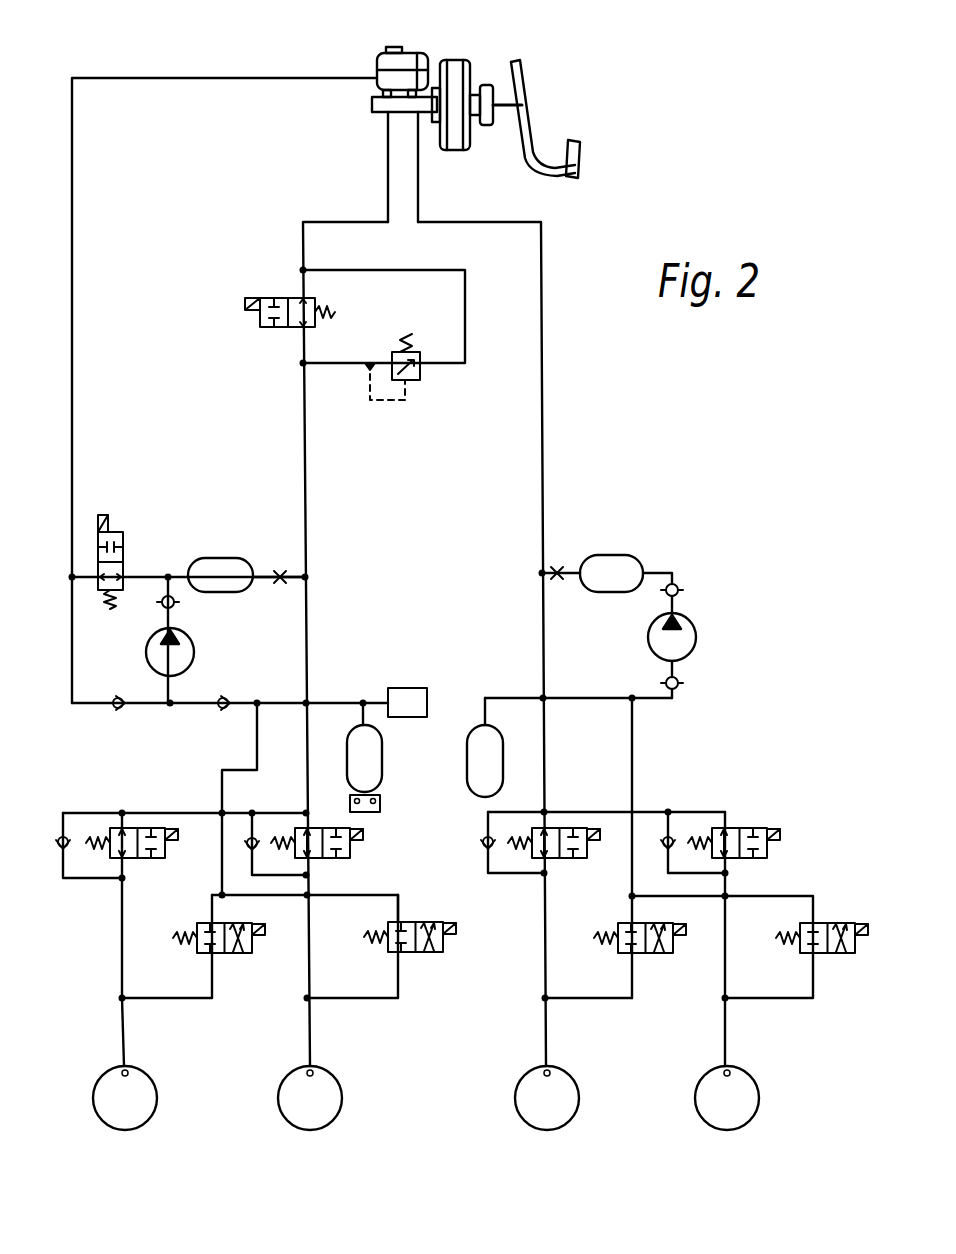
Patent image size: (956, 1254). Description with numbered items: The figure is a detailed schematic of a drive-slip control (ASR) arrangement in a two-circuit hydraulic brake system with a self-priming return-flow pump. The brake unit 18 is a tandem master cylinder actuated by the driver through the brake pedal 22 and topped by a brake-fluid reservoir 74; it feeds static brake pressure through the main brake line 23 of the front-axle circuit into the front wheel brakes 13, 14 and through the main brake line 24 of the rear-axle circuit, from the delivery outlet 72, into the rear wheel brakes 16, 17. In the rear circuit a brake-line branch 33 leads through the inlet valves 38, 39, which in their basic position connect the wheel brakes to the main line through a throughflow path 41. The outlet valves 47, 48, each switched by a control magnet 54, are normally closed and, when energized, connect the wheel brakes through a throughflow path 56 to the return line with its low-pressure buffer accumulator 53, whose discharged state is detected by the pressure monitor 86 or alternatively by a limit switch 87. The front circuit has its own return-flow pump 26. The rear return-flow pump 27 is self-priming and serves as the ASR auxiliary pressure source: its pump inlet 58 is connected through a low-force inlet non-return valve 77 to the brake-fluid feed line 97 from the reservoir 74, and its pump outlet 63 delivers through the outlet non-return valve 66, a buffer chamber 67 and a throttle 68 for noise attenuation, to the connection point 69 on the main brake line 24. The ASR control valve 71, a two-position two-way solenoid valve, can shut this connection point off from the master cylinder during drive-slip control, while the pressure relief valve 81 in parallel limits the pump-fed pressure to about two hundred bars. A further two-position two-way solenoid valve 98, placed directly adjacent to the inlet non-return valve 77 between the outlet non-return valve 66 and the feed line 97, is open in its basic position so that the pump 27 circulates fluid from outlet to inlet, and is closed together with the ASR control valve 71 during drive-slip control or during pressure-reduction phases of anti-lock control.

The brake-fluid reservoir 74 is at (380, 60).
The delivery outlet 72 is at (388, 133).
The brake unit 18 is at (428, 126).
The brake pedal 22 is at (537, 170).
The brake-fluid feed line 97 is at (88, 330).
The ASR control valve 71 is at (268, 298).
The pressure relief valve 81 is at (395, 352).
The main brake line 24 is at (300, 460).
The main brake line 23 is at (542, 420).
The 2/2-way solenoid valve 98 is at (125, 530).
The buffer chamber 67 is at (231, 588).
The throttle 68 is at (278, 575).
The connection point 69 is at (310, 575).
The pump outlet 63 is at (160, 605).
The outlet non-return valve 66 is at (175, 605).
The return-flow pump 27 is at (158, 666).
The pressure monitor 86 is at (418, 688).
The buffer accumulator 53 is at (372, 765).
The limit switch 87 is at (380, 803).
The inlet non-return valve 77 is at (122, 710).
The pump inlet 58 is at (172, 710).
The throughflow path 41 is at (118, 840).
The brake-line branch 33 is at (130, 815).
The inlet valve 38 is at (135, 858).
The inlet valve 39 is at (350, 850).
The control magnet 54 is at (445, 925).
The outlet valve 48 is at (420, 955).
The throughflow path 56 is at (246, 955).
The outlet valve 47 is at (222, 985).
The return-flow pump 26 is at (660, 651).
The wheel brake 16 is at (111, 1113).
The wheel brake 17 is at (296, 1113).
The wheel brake 13 is at (533, 1113).
The wheel brake 14 is at (713, 1113).